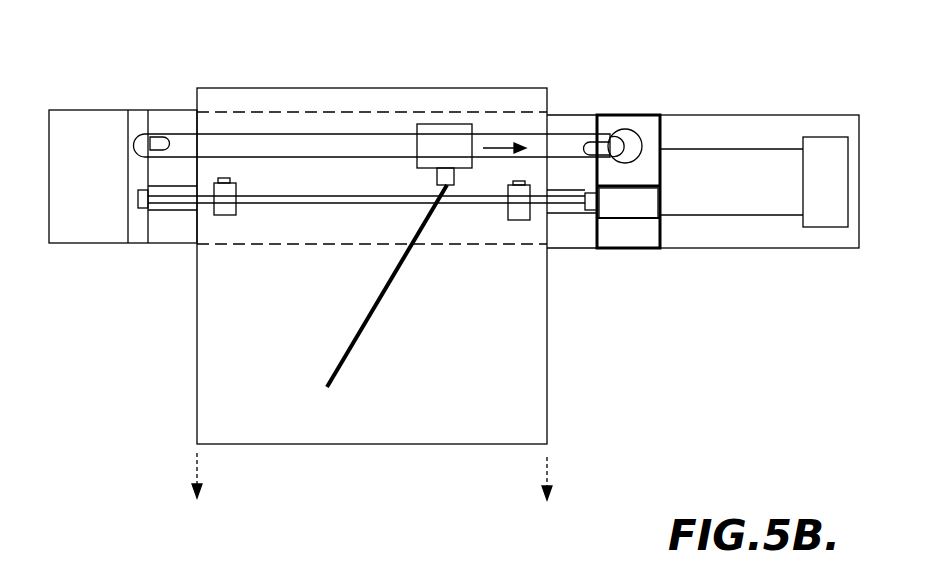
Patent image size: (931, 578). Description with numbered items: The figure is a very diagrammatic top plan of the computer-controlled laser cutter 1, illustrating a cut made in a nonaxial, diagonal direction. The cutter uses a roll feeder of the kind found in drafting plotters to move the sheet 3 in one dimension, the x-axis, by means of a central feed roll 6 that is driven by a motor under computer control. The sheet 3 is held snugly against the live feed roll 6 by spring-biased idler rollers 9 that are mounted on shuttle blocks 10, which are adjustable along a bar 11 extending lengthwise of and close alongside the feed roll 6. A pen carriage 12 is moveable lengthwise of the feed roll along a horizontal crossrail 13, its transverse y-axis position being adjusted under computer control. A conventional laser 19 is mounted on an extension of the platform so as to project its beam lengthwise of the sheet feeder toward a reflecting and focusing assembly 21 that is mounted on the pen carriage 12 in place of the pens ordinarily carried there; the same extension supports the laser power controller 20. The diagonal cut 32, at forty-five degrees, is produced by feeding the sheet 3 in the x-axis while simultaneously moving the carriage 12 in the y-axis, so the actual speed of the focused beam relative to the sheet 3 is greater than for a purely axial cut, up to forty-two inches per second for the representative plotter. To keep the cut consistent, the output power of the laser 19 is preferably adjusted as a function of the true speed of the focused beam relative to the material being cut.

The computer-controlled laser cutter 1 is at (163, 98).
The sheet 3 is at (525, 382).
The feed roll 6 is at (173, 208).
The idler rollers 9 is at (230, 180).
The shuttle blocks 10 is at (236, 208).
The bar 11 is at (472, 203).
The pen carriage 12 is at (448, 145).
The crossrail 13 is at (291, 147).
The laser 19 is at (720, 170).
The laser power controller 20 is at (826, 210).
The reflecting and focusing assembly 21 is at (437, 178).
The diagonal cut 32 is at (378, 302).